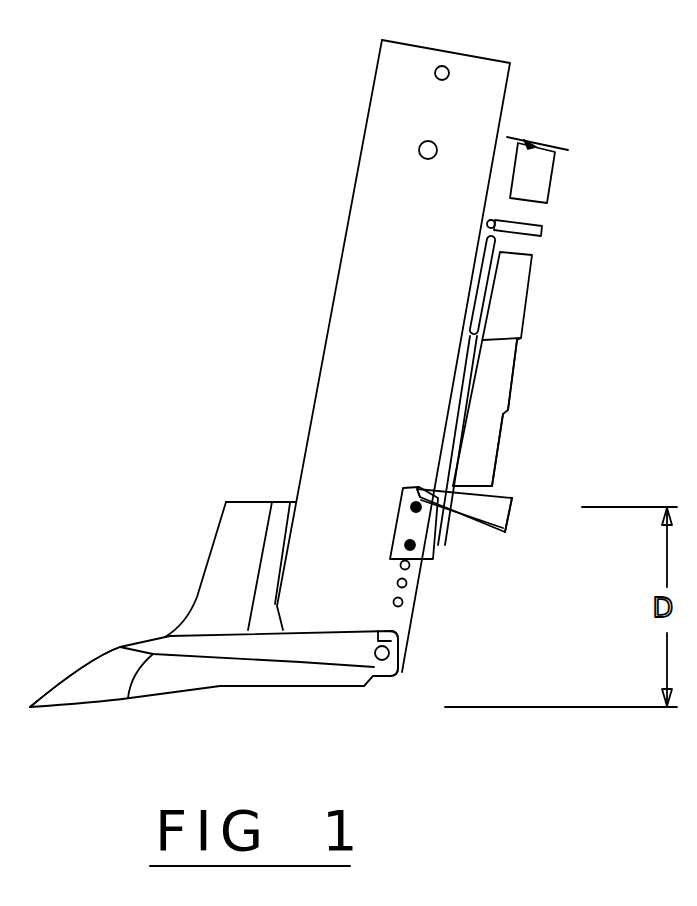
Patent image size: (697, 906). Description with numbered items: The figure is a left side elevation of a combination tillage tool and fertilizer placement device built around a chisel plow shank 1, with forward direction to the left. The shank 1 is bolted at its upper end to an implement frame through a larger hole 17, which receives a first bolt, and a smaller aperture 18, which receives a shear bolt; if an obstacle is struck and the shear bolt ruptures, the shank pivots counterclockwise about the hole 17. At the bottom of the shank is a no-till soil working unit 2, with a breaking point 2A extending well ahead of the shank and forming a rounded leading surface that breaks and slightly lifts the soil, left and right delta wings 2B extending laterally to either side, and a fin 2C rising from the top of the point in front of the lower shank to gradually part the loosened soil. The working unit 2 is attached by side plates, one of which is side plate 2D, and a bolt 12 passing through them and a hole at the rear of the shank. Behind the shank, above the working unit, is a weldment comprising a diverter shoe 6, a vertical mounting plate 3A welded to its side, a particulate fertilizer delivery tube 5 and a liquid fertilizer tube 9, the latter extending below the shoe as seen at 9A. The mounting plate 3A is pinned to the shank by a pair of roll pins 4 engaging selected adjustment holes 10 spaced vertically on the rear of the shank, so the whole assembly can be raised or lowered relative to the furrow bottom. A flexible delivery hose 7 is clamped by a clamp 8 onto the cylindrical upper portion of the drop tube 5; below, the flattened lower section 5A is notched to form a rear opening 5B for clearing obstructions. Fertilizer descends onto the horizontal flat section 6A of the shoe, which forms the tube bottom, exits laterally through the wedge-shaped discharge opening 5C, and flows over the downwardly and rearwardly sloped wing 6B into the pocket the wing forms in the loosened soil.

The chisel plow shank 1 is at (332, 302).
The soil working unit 2 is at (225, 688).
The breaking point 2A is at (87, 660).
The wings 2B is at (337, 664).
The fin 2C is at (213, 548).
The side plate 2D is at (265, 674).
The mounting plate 3A is at (438, 560).
The roll pins 4 is at (405, 543).
The fertilizer delivery tube 5 is at (532, 296).
The lower section of delivery tube 5A is at (519, 380).
The rear opening 5B is at (504, 433).
The lateral discharge opening 5C is at (495, 487).
The diverter plate (shoe) 6 is at (512, 517).
The horizontal flat section of shoe 6A is at (424, 487).
The wing of shoe 6B is at (493, 498).
The fertilizer delivery hose 7 is at (549, 178).
The clamp 8 is at (543, 234).
The liquid fertilizer tube 9 is at (484, 326).
The lower extension of liquid fertilizer tube 9A is at (445, 533).
The adjustment holes 10 is at (412, 567).
The bolt 12 is at (390, 655).
The larger hole 17 is at (419, 150).
The smaller aperture 18 is at (434, 74).